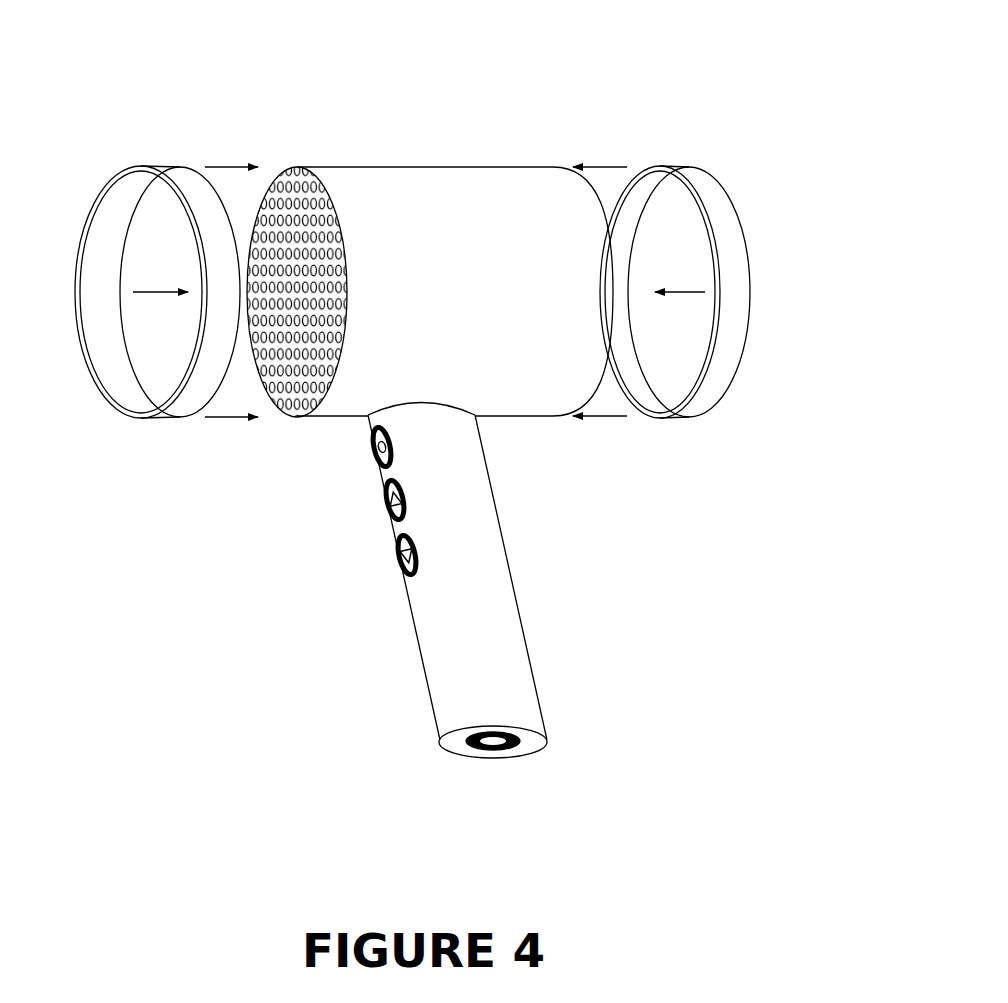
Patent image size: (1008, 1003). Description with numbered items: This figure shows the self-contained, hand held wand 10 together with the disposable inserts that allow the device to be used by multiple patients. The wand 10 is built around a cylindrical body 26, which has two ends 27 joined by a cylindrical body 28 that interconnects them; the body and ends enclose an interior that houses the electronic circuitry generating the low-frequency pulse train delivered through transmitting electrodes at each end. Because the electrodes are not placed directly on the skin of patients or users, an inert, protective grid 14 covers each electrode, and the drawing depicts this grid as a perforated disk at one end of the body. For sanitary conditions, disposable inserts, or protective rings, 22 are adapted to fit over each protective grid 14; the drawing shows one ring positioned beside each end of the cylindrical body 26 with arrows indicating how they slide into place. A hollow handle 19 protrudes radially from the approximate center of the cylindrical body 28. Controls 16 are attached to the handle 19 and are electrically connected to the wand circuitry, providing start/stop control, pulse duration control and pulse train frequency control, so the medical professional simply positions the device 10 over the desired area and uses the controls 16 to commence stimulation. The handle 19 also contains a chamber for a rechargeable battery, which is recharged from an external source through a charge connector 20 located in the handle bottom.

The hand held wand 10 is at (764, 84).
The protective grid 14 is at (298, 357).
The controls 16 is at (345, 530).
The hollow handle 19 is at (497, 592).
The charge connector 20 is at (503, 742).
The disposable insert (protective ring) 22 is at (155, 82).
The cylindrical body 26 is at (448, 167).
The ends 27 is at (348, 280).
The cylindrical body 28 is at (495, 290).